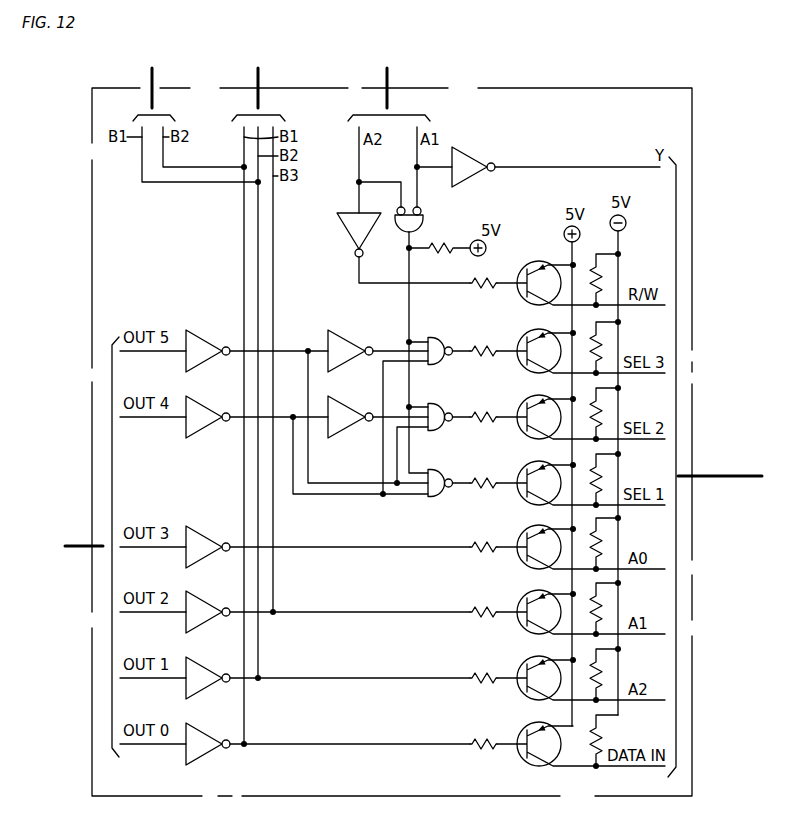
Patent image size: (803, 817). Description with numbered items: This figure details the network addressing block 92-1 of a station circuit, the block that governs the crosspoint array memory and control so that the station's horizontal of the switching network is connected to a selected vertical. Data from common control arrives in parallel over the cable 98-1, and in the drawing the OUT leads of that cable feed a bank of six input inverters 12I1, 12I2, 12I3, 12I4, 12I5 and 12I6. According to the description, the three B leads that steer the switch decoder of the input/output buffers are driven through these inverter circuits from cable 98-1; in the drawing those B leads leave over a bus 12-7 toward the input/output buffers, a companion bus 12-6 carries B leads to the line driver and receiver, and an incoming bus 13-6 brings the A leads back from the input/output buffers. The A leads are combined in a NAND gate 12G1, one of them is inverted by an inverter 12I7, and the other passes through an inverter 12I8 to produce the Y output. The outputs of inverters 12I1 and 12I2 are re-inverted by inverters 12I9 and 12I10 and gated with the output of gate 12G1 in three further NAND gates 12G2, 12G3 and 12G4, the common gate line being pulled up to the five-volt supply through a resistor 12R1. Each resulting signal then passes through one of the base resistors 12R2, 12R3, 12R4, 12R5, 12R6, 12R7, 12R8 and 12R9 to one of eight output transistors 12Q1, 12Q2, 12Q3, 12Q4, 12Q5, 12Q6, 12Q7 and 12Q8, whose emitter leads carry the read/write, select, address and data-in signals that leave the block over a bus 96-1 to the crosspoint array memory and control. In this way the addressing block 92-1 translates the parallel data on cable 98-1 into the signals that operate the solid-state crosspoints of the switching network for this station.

The bus to LDR 12-6 is at (155, 78).
The bus to I/O 12-7 is at (261, 78).
The bus from I/O 13-6 is at (390, 78).
The network addressing 92-1 is at (588, 88).
The bus to cross point array memory and control 96-1 is at (727, 481).
The cable 98-1 is at (79, 553).
The inverter 12I1 is at (197, 336).
The inverter 12I2 is at (197, 402).
The inverter 12I3 is at (197, 532).
The inverter 12I4 is at (197, 597).
The inverter 12I5 is at (197, 663).
The inverter 12I6 is at (197, 729).
The inverter 12I7 is at (346, 229).
The inverter 12I8 is at (465, 152).
The inverter 12I9 is at (346, 336).
The inverter 12I10 is at (346, 402).
The NAND gate 12G1 is at (426, 222).
The NAND gate 12G2 is at (433, 337).
The NAND gate 12G3 is at (437, 395).
The NAND gate 12G4 is at (433, 469).
The resistor 12R1 is at (439, 262).
The resistor 12R2 is at (486, 296).
The resistor 12R3 is at (486, 364).
The resistor 12R4 is at (486, 430).
The resistor 12R5 is at (486, 496).
The resistor 12R6 is at (486, 560).
The resistor 12R7 is at (486, 625).
The resistor 12R8 is at (486, 691).
The resistor 12R9 is at (486, 757).
The transistor 12Q1 is at (520, 269).
The transistor 12Q2 is at (520, 337).
The transistor 12Q3 is at (520, 403).
The transistor 12Q4 is at (520, 469).
The transistor 12Q5 is at (520, 533).
The transistor 12Q6 is at (520, 598).
The transistor 12Q7 is at (520, 664).
The transistor 12Q8 is at (520, 730).